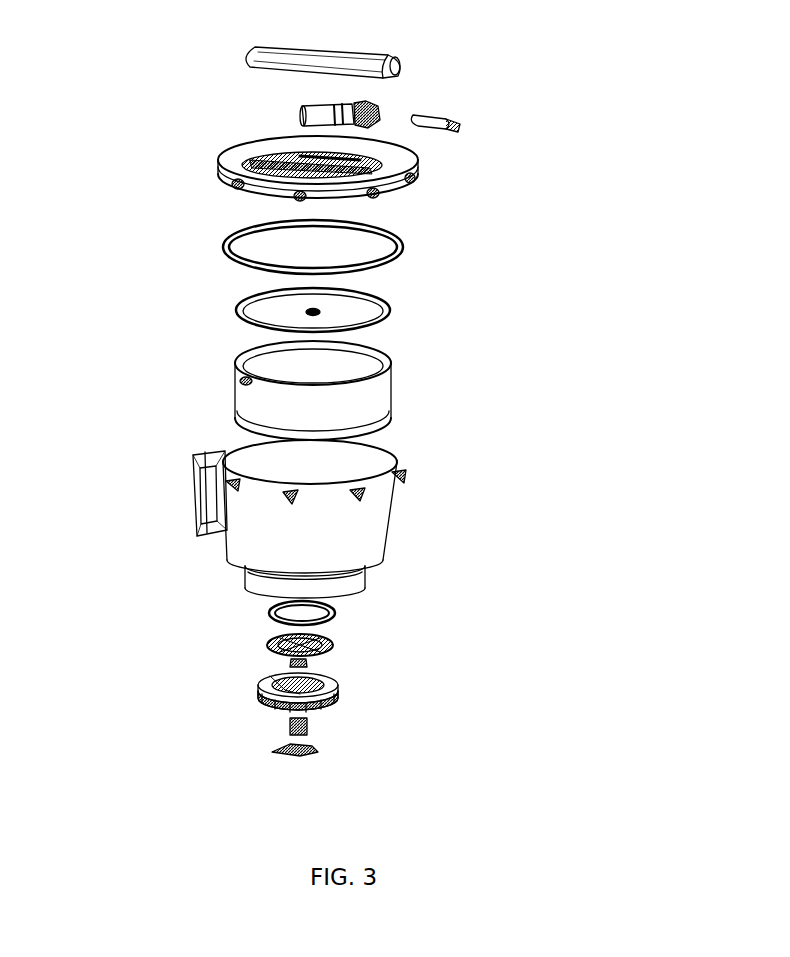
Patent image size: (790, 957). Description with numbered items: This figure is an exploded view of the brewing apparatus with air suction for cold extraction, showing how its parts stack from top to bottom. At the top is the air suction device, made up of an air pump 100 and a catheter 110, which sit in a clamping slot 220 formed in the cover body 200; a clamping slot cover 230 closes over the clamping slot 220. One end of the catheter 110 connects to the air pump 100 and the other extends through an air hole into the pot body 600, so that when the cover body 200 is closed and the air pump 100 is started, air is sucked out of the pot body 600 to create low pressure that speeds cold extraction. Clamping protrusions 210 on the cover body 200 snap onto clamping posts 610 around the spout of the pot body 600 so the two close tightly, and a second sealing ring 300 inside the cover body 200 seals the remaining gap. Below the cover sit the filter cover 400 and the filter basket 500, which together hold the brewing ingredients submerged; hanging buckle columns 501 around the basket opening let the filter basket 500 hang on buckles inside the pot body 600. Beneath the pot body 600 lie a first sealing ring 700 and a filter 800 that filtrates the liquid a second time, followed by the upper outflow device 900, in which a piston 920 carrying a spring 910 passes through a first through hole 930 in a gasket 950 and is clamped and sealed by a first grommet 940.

The air pump 100 is at (360, 110).
The catheter 110 is at (455, 127).
The cover body 200 is at (306, 169).
The clamping protrusions 210 is at (218, 185).
The clamping slot 220 is at (262, 158).
The clamping slot cover 230 is at (355, 50).
The second sealing ring 300 is at (353, 237).
The filter cover 400 is at (353, 315).
The filter basket 500 is at (314, 390).
The hanging buckle columns 501 is at (240, 383).
The pot body 600 is at (379, 519).
The clamping posts 610 is at (400, 477).
The first sealing ring 700 is at (305, 617).
The filter 800 is at (325, 640).
The upper outflow device 900 is at (366, 708).
The spring 910 is at (308, 728).
The piston 920 is at (318, 751).
The first through hole 930 is at (270, 676).
The first grommet 940 is at (308, 663).
The gasket 950 is at (305, 687).